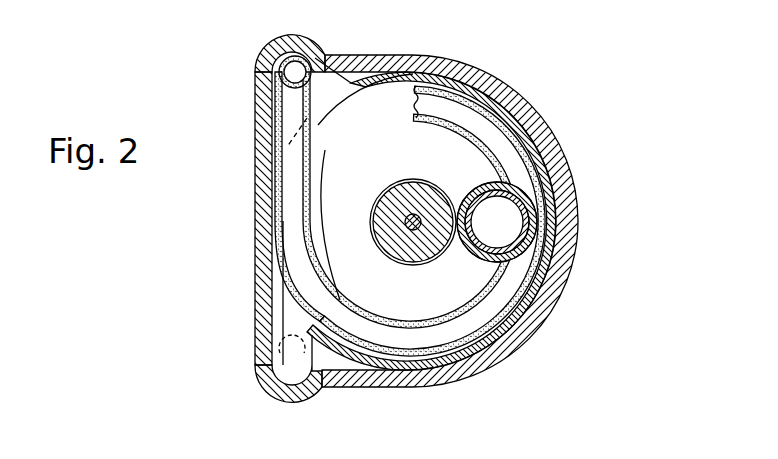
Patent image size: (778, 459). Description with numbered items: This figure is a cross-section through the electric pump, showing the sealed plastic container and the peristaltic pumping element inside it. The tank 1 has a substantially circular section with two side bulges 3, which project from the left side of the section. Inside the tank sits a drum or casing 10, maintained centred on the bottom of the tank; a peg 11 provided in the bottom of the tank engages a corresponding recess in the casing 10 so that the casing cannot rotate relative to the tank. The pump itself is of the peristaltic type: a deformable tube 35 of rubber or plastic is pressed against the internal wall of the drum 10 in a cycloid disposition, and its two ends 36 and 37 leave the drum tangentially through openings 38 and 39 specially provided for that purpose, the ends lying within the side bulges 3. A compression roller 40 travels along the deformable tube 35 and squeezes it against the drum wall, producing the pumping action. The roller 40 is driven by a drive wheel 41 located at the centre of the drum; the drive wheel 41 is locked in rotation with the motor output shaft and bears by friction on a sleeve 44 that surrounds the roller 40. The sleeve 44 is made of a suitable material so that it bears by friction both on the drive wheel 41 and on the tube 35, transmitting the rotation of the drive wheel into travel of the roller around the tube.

The tank 1 is at (505, 93).
The side bulges 3 is at (281, 38).
The drum or casing 10 is at (538, 145).
The peg 11 is at (280, 265).
The deformable tube 35 is at (473, 322).
The end of deformable tube 36 is at (285, 360).
The end of deformable tube 37 is at (294, 70).
The opening 38 is at (295, 305).
The opening 39 is at (296, 130).
The compression roller 40 is at (523, 228).
The drive wheel 41 is at (388, 212).
The sleeve 44 is at (523, 195).